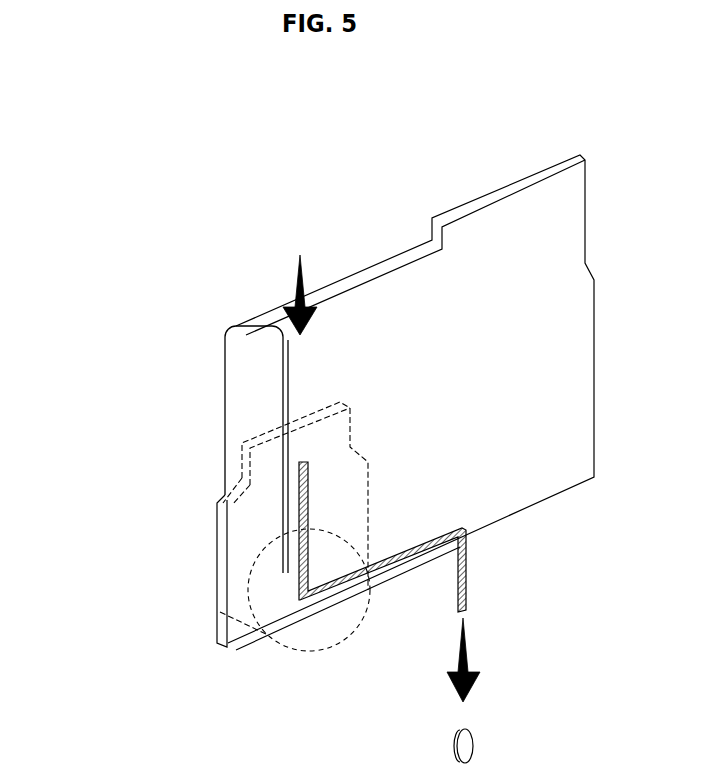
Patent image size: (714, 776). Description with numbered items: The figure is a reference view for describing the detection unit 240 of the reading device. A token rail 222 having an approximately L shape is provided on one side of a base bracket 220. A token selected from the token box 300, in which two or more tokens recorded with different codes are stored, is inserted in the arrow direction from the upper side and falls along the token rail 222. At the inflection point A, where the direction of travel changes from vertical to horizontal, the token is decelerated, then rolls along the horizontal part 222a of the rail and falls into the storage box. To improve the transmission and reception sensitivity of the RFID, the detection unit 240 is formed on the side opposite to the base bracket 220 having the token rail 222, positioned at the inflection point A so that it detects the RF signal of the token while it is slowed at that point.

The base bracket 220 is at (517, 285).
The token rail 222 is at (262, 370).
The horizontal part 222a is at (443, 553).
The detection unit 240 is at (232, 627).
The token box 300 is at (475, 746).
The inflection point A is at (293, 647).